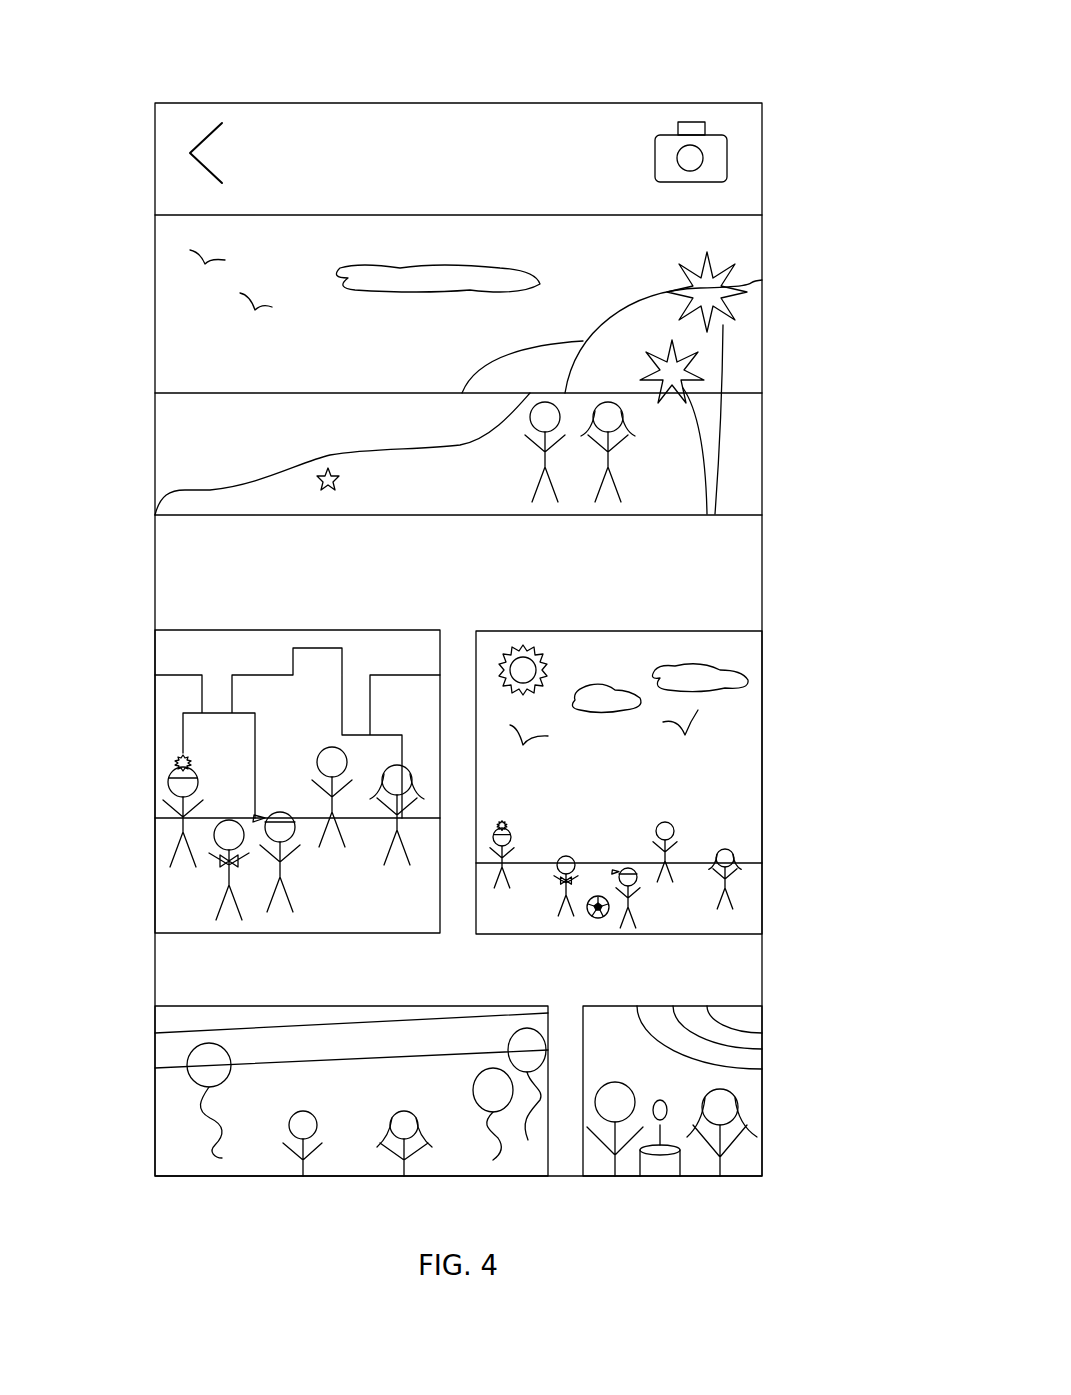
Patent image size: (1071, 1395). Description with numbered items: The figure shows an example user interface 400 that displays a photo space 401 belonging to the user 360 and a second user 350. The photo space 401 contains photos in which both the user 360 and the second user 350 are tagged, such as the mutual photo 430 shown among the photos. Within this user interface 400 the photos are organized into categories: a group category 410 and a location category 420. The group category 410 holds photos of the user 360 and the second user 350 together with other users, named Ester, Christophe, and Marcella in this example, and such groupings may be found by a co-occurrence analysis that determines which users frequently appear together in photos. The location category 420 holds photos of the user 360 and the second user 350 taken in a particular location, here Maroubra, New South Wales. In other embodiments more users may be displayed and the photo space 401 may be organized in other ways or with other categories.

The user interface 400 is at (172, 103).
The photo space 401 is at (298, 140).
The group category 410 is at (178, 572).
The location category 420 is at (172, 962).
The mutual photo 430 is at (714, 739).
The user 360 is at (672, 810).
The second user 350 is at (743, 845).